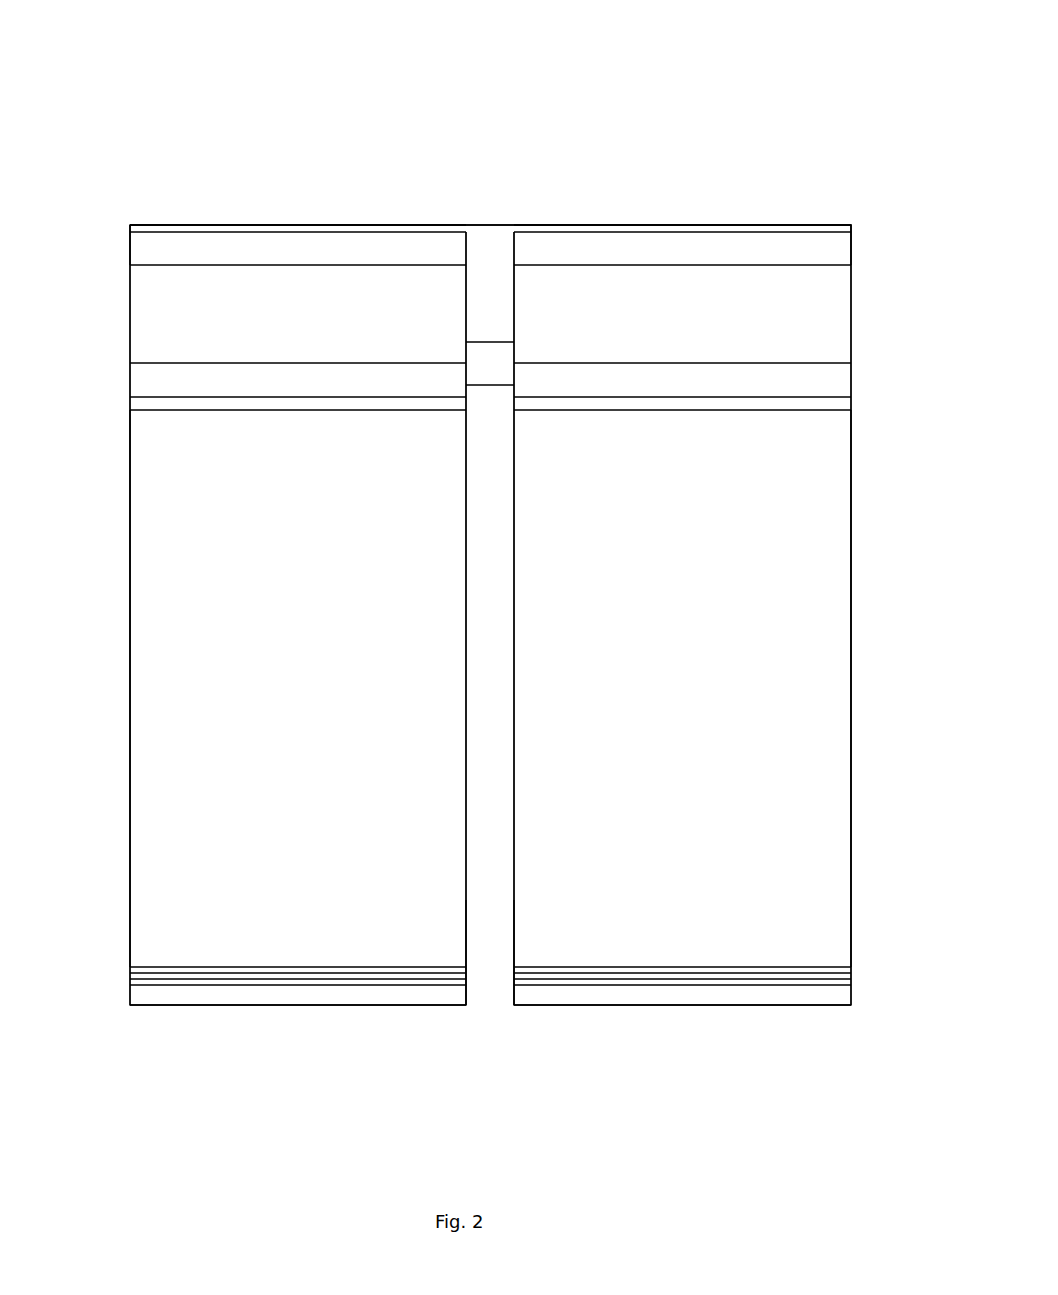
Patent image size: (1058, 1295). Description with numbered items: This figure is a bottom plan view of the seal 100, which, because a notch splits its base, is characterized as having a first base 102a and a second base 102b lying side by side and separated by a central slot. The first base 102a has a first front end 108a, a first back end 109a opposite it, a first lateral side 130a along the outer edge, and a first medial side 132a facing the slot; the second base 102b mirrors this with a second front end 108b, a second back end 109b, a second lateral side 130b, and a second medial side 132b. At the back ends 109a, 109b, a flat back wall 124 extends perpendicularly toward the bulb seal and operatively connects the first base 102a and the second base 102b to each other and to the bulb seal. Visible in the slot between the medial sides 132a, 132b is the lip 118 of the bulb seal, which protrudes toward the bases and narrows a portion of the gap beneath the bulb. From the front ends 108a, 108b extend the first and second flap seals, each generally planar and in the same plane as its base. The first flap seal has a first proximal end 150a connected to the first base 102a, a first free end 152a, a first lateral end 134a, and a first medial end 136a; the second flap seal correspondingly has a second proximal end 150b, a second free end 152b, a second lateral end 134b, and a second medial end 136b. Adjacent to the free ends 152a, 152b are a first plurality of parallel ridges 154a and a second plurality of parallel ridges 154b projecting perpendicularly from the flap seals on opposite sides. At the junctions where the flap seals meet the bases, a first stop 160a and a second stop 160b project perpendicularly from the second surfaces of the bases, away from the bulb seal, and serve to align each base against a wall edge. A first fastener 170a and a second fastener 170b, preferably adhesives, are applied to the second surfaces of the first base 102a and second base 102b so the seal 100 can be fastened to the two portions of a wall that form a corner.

The seal 100 is at (534, 508).
The first base 102a is at (632, 238).
The second base 102b is at (273, 243).
The first front end 108a is at (868, 385).
The second front end 108b is at (120, 386).
The first back end 109a is at (860, 220).
The second back end 109b is at (127, 215).
The lip 118 is at (496, 386).
The back wall 124 is at (730, 228).
The first lateral side 130a is at (865, 345).
The second lateral side 130b is at (120, 337).
The first medial side 132a is at (508, 244).
The second medial side 132b is at (469, 245).
The first lateral end 134a is at (843, 893).
The second lateral end 134b is at (142, 887).
The first medial end 136a is at (510, 1006).
The second medial end 136b is at (470, 1006).
The first proximal end 150a is at (868, 422).
The second proximal end 150b is at (125, 415).
The first free end 152a is at (657, 1030).
The second free end 152b is at (240, 1030).
The first ridge 154a is at (851, 968).
The second ridge 154b is at (130, 968).
The first stop 160a is at (792, 410).
The second stop 160b is at (182, 410).
The first fastener 170a is at (840, 292).
The second fastener 170b is at (130, 287).